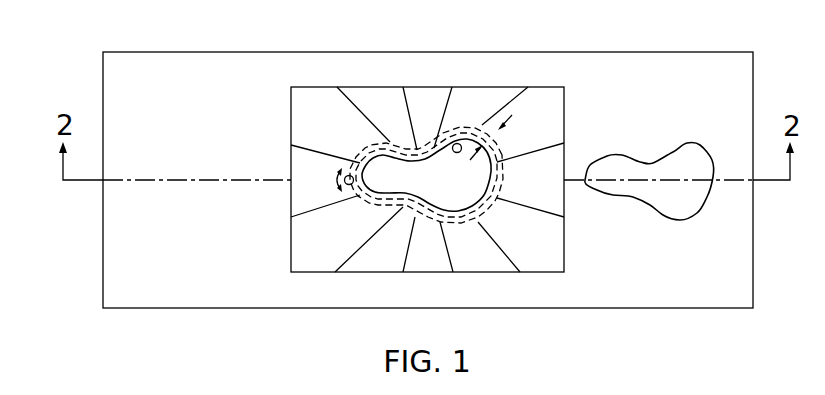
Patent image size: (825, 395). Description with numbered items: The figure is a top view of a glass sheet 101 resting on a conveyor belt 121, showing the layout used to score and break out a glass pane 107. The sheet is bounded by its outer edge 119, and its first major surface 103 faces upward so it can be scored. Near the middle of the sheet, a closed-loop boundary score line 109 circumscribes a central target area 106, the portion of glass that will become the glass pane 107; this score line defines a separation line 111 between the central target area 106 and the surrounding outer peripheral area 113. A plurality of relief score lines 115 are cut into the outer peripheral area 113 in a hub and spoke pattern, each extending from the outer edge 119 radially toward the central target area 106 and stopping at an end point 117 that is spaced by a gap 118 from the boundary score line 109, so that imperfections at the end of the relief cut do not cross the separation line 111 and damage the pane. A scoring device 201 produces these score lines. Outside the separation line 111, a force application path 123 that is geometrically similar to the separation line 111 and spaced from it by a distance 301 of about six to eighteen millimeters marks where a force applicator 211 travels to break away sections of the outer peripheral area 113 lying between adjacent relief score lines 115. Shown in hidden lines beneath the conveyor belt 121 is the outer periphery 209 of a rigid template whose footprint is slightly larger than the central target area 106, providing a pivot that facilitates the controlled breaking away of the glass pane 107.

The conveyor belt 121 is at (158, 60).
The outer edge 119 is at (290, 258).
The glass sheet 101 is at (537, 95).
The outer peripheral area 113 is at (427, 95).
The relief score line 115 is at (313, 145).
The end point 117 is at (403, 208).
The first major surface 103 is at (552, 190).
The central target area 106 is at (390, 168).
The gap 118 is at (423, 177).
The outer periphery 209 is at (370, 206).
The separation line 111 is at (462, 218).
The boundary score line 109 is at (505, 152).
The force application path 123 is at (497, 217).
The distance 301 is at (486, 126).
The scoring device 201 is at (457, 153).
The force applicator 211 is at (343, 180).
The glass pane 107 is at (691, 149).